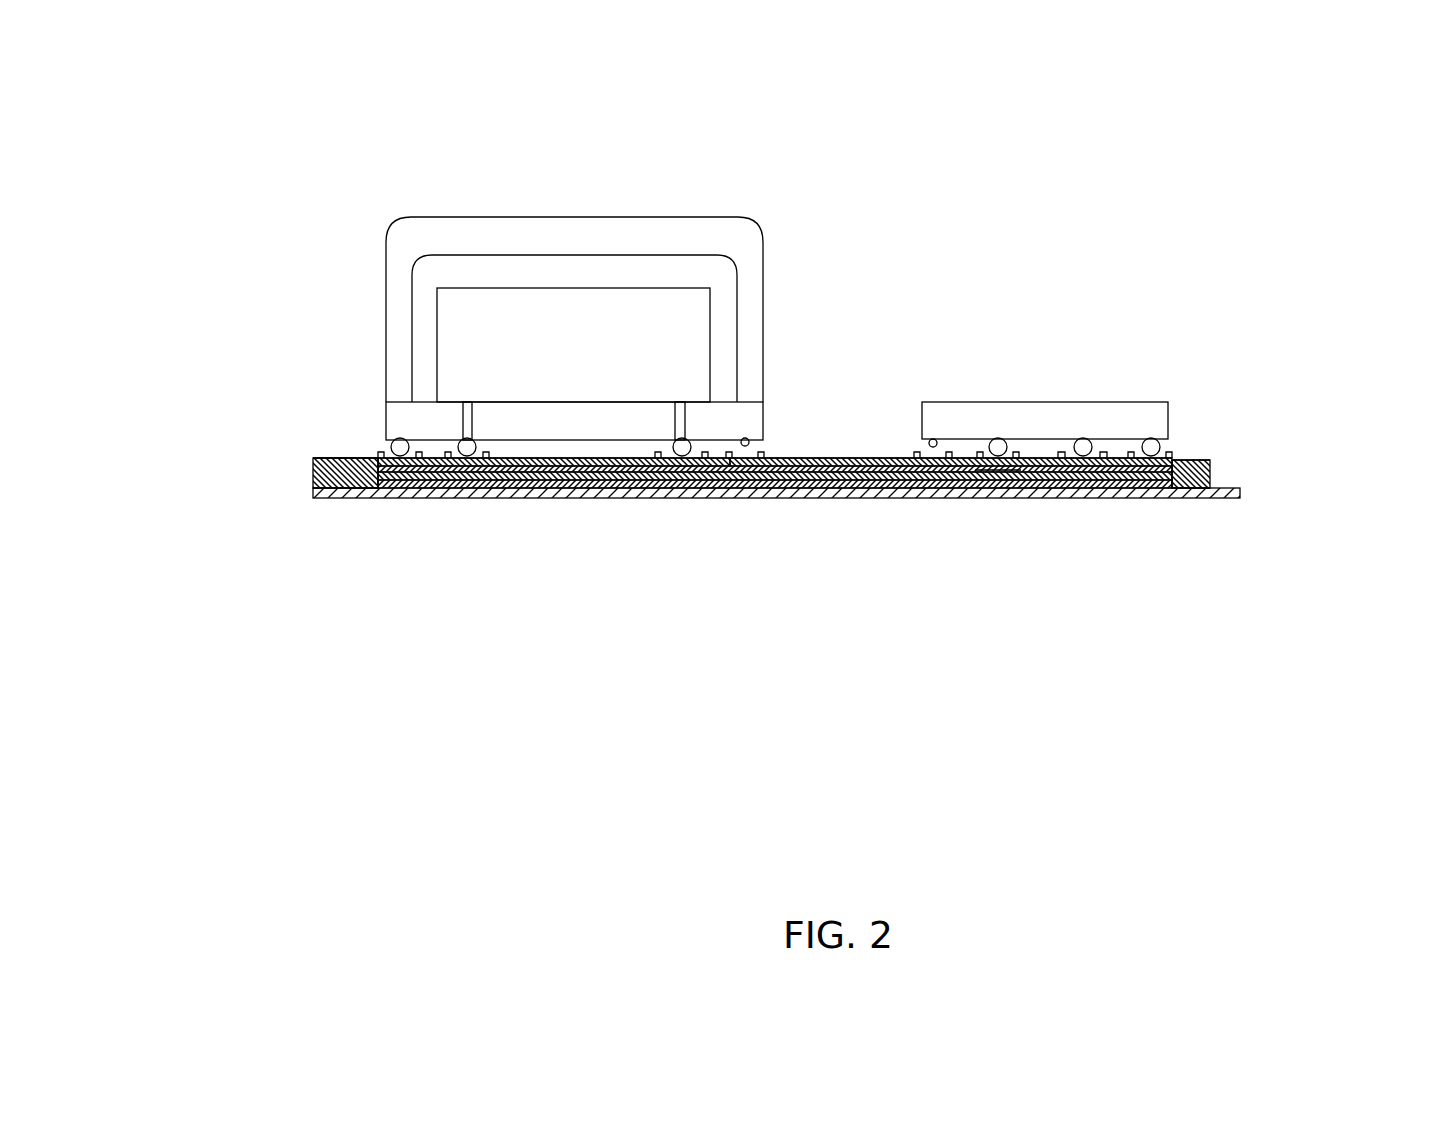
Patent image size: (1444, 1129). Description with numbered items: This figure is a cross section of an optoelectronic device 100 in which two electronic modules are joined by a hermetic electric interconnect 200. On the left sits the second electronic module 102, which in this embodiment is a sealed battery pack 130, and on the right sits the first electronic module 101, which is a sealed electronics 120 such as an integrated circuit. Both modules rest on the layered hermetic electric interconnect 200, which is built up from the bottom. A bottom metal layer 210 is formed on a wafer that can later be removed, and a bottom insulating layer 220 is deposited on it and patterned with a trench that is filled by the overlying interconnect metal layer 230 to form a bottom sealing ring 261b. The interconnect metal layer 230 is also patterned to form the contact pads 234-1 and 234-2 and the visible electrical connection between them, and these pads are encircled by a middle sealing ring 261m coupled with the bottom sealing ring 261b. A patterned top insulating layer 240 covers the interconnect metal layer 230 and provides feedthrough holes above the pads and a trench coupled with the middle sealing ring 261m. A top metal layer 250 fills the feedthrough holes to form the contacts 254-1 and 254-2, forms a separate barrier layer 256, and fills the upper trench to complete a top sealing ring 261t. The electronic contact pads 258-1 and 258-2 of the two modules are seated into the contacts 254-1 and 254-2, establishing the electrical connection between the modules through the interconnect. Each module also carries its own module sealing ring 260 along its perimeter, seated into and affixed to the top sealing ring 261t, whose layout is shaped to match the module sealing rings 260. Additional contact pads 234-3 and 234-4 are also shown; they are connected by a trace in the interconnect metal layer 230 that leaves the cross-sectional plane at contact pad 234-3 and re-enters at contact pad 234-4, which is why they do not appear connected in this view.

The optoelectronic device 100 is at (452, 98).
The first electronic module 101 is at (1139, 293).
The second electronic module 102 is at (574, 280).
The sealed electronics 120 is at (1054, 393).
The sealed battery pack 130 is at (574, 309).
The hermetic electric interconnect 200 is at (758, 628).
The bottom metal layer 210 is at (1098, 498).
The bottom insulating layer 220 is at (1130, 498).
The interconnect metal layer 230 is at (758, 490).
The contact pad 234-1 is at (985, 498).
The contact pad 234-2 is at (663, 490).
The contact pad 234-3 is at (455, 478).
The contact pad 234-4 is at (1053, 498).
The top insulating layer 240 is at (728, 490).
The top metal layer 250 is at (790, 490).
The contact 254-1 is at (983, 447).
The contact 254-2 is at (745, 438).
The barrier layer 256 is at (770, 456).
The electronic contact pad 258-1 is at (998, 438).
The electronic contact pad 258-2 is at (684, 438).
The module sealing ring 260 is at (1303, 322).
The top sealing ring 261t is at (1290, 388).
The middle sealing ring 261m is at (1285, 470).
The bottom sealing ring 261b is at (1297, 573).